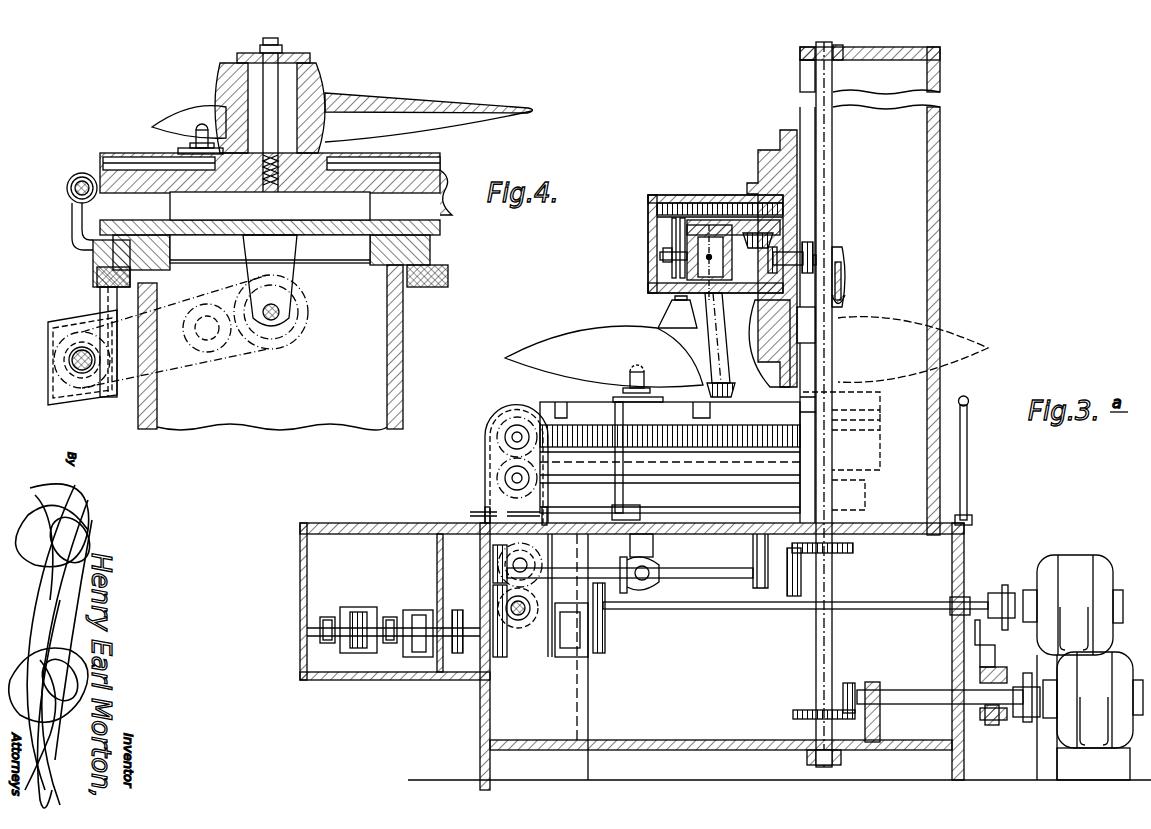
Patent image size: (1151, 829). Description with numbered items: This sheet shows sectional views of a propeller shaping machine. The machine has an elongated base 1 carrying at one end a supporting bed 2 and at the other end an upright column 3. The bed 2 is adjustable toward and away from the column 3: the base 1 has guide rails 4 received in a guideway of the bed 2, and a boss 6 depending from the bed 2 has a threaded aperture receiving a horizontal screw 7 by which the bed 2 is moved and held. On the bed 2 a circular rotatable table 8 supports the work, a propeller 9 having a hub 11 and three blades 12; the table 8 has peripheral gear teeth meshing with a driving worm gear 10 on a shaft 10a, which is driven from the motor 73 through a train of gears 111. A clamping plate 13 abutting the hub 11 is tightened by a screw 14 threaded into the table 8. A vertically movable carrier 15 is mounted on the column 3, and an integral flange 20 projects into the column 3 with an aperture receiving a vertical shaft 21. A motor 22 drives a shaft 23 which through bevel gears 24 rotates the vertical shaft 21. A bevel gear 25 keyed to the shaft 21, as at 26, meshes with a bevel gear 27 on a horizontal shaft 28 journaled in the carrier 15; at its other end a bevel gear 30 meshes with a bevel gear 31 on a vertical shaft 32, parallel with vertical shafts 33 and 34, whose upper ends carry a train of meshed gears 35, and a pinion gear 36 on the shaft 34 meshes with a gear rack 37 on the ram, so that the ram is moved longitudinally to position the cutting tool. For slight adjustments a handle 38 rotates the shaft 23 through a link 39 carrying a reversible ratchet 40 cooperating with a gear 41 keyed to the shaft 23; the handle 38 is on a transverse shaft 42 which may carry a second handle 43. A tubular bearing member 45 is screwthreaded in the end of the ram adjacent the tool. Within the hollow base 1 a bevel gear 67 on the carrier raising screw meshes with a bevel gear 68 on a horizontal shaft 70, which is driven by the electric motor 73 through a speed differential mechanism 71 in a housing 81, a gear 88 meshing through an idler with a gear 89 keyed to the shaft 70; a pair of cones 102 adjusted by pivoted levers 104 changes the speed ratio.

In FIG. 4, the base 1 is at (403, 352).
In FIG. 3a, the base 1 is at (962, 572).
In FIG. 4, the supporting bed 2 is at (417, 255).
In FIG. 3a, the supporting bed 2 is at (868, 478).
In FIG. 3a, the upright column 3 is at (940, 282).
In FIG. 4, the guide rails 4 is at (100, 276).
In FIG. 4, the boss 6 is at (290, 262).
In FIG. 4, the screw 7 is at (283, 312).
In FIG. 4, the table 8 is at (440, 172).
In FIG. 4, the propeller 9 is at (373, 85).
In FIG. 3a, the propeller 9 is at (880, 452).
In FIG. 4, the worm gear 10 is at (82, 172).
In FIG. 4, the shaft 10a is at (74, 198).
In FIG. 4, the hub 11 is at (320, 85).
In FIG. 3a, the hub 11 is at (672, 316).
In FIG. 4, the blades 12 is at (175, 120).
In FIG. 3a, the blades 12 is at (590, 333).
In FIG. 4, the clamping plate 13 is at (293, 54).
In FIG. 4, the screw 14 is at (265, 90).
In FIG. 3a, the carrier 15 is at (800, 160).
In FIG. 3a, the flange 20 is at (845, 300).
In FIG. 3a, the vertical shaft 21 is at (833, 350).
In FIG. 3a, the motor 22 is at (1063, 725).
In FIG. 3a, the shaft 23 is at (926, 700).
In FIG. 3a, the bevel gears 24 is at (840, 703).
In FIG. 3a, the bevel gear 25 is at (843, 282).
In FIG. 3a, the spline or key 26 is at (840, 262).
In FIG. 3a, the bevel gear 27 is at (827, 250).
In FIG. 3a, the horizontal shaft 28 is at (810, 258).
In FIG. 3a, the bevel gear 30 is at (795, 258).
In FIG. 3a, the bevel gear 31 is at (790, 243).
In FIG. 3a, the vertical shaft 32 is at (755, 233).
In FIG. 3a, the vertical shaft 33 is at (712, 212).
In FIG. 3a, the vertical shaft 34 is at (674, 228).
In FIG. 3a, the train of meshed gears 35 is at (728, 214).
In FIG. 3a, the pinion gear 36 is at (665, 254).
In FIG. 3a, the gear rack 37 is at (685, 256).
In FIG. 3a, the handle 38 is at (968, 480).
In FIG. 3a, the link 39 is at (958, 604).
In FIG. 3a, the ratchet 40 is at (995, 655).
In FIG. 3a, the gear 41 is at (990, 728).
In FIG. 3a, the shaft 42 is at (748, 508).
In FIG. 3a, the second handle 43 is at (623, 491).
In FIG. 3a, the bearing member 45 is at (712, 257).
In FIG. 3a, the bevel gear 67 is at (853, 548).
In FIG. 3a, the bevel gear 68 is at (795, 598).
In FIG. 3a, the horizontal shaft 70 is at (685, 590).
In FIG. 3a, the speed differential mechanism 71 is at (430, 600).
In FIG. 3a, the electric motor 73 is at (1075, 555).
In FIG. 3a, the housing 81 is at (300, 672).
In FIG. 3a, the gear 88 is at (493, 590).
In FIG. 3a, the gear 89 is at (493, 560).
In FIG. 3a, the cones 102 is at (366, 608).
In FIG. 3a, the levers 104 is at (327, 617).
In FIG. 3a, the train of gears 111 is at (485, 452).